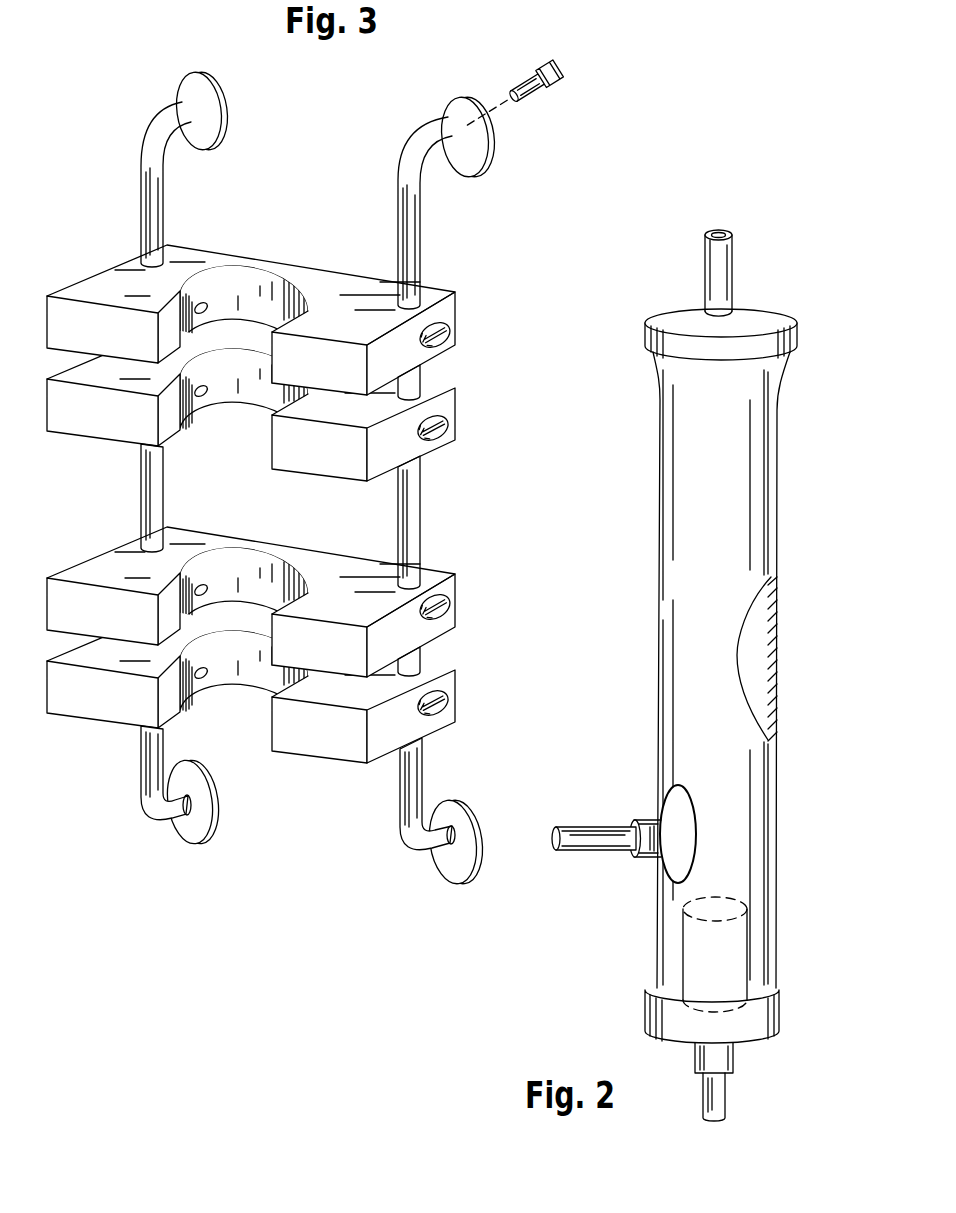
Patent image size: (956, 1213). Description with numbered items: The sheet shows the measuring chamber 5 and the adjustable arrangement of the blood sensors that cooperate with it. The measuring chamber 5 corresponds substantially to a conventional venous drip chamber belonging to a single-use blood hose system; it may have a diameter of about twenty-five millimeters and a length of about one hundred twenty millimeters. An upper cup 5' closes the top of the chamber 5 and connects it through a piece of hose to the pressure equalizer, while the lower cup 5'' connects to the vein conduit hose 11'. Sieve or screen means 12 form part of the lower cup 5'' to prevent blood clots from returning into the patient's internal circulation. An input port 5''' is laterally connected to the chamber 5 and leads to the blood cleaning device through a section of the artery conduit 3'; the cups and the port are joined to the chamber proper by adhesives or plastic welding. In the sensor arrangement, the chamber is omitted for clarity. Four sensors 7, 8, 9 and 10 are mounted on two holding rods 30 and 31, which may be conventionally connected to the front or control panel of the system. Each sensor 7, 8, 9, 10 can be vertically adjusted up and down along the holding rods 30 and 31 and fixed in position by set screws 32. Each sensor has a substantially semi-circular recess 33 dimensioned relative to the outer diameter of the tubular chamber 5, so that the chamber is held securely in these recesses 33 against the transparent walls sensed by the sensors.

In FIG. 2, the measuring chamber 5 is at (721, 670).
In FIG. 2, the upper cup 5' is at (722, 295).
In FIG. 2, the lower cup 5'' is at (678, 1029).
In FIG. 2, the input port 5''' is at (656, 813).
In FIG. 2, the artery conduit 3' is at (594, 864).
In FIG. 2, the vein conduit hose 11' is at (731, 1082).
In FIG. 2, the sieve or screen means 12 is at (683, 946).
In FIG. 3, the sensor 7 is at (108, 700).
In FIG. 3, the sensor 8 is at (89, 622).
In FIG. 3, the sensor 9 is at (102, 403).
In FIG. 3, the sensor 10 is at (82, 311).
In FIG. 3, the holding rod 30 is at (157, 508).
In FIG. 3, the holding rod 31 is at (417, 511).
In FIG. 3, the set screw 32 is at (444, 420).
In FIG. 3, the semi-circular recess 33 is at (226, 372).